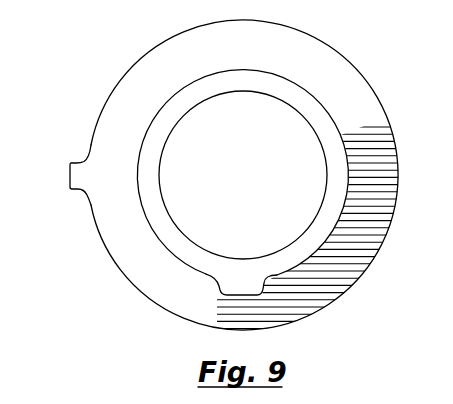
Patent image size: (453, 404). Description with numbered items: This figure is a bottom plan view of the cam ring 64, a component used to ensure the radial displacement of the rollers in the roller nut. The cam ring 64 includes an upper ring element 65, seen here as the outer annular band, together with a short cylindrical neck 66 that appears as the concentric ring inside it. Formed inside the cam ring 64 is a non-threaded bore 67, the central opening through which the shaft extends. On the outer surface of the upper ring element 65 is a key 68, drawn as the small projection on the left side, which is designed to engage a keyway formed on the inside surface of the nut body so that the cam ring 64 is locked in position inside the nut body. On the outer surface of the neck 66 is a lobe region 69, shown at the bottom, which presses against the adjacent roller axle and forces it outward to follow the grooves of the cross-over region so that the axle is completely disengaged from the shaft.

The cam ring 64 is at (223, 177).
The upper ring element 65 is at (350, 64).
The short cylindrical neck 66 is at (326, 108).
The non-threaded bore 67 is at (254, 193).
The key 68 is at (77, 163).
The lobe region 69 is at (228, 296).